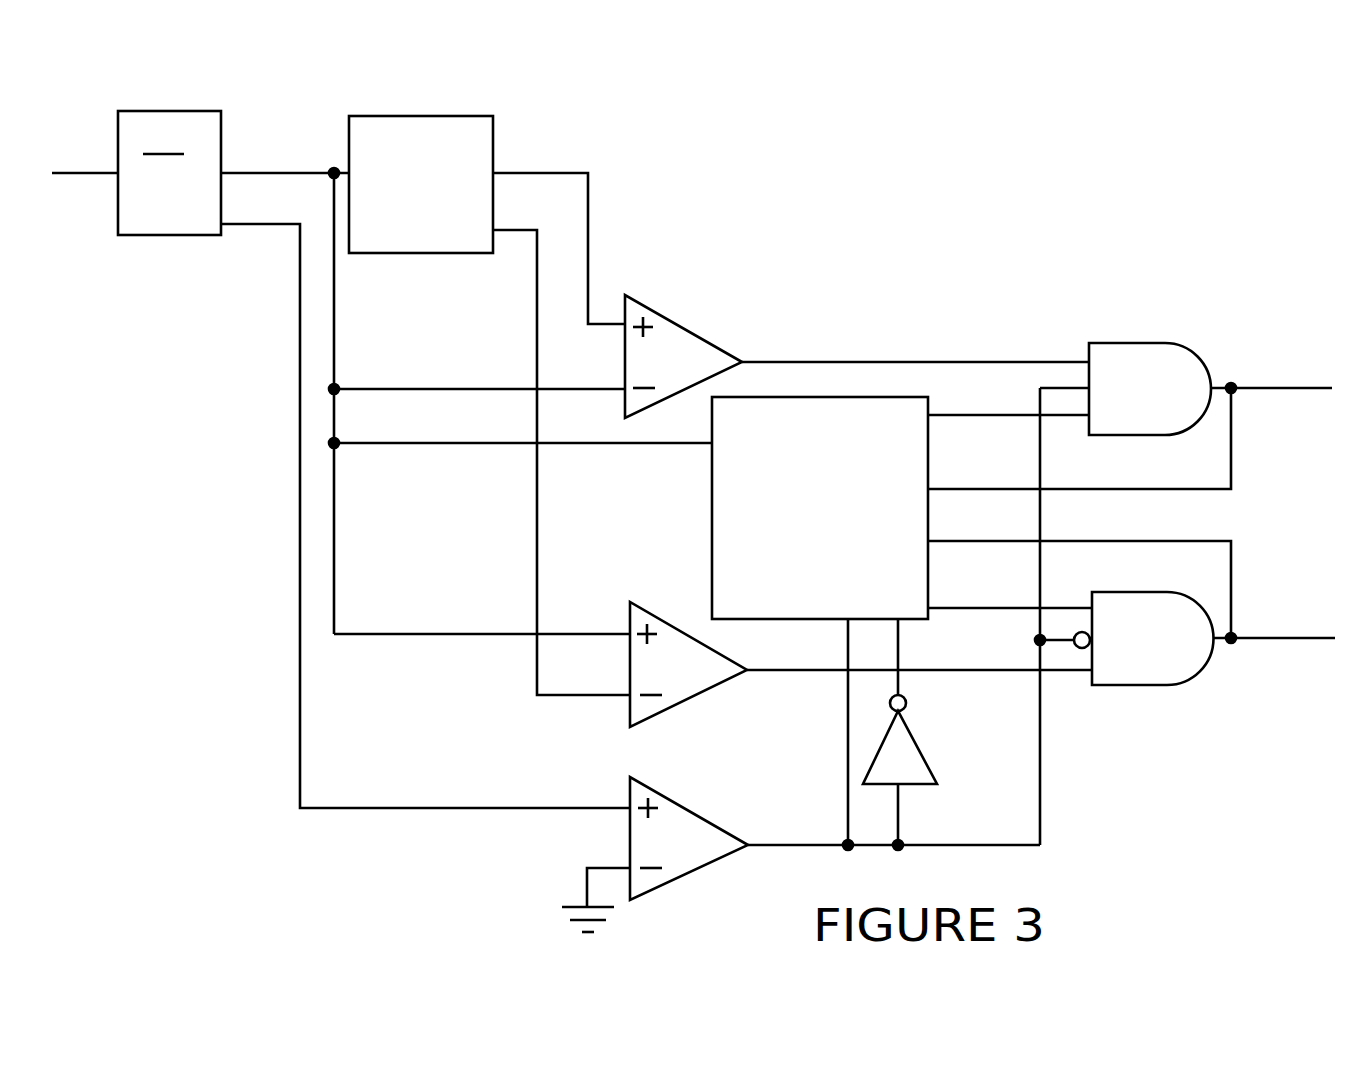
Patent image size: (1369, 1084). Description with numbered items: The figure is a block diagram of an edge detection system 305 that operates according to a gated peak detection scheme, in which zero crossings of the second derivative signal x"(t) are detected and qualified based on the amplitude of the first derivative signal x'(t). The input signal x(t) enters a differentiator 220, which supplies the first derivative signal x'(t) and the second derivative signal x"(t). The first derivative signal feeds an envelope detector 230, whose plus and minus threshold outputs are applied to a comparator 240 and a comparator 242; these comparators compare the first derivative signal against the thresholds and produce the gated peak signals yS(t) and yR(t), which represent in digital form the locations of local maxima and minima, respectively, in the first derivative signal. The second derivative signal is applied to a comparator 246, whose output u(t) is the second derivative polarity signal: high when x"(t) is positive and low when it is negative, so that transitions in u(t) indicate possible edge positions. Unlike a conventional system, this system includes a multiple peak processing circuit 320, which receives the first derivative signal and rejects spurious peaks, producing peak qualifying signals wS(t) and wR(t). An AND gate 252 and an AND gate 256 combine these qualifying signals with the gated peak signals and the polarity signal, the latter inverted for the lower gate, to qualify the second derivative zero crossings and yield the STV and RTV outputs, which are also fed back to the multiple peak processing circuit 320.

The edge detection system 305 is at (922, 180).
The differentiator 220 is at (192, 224).
The envelope detector 230 is at (444, 220).
The comparator 240 is at (700, 374).
The comparator 242 is at (705, 679).
The comparator 246 is at (710, 853).
The multiple peak processing circuit 320 is at (843, 591).
The AND gate 252 is at (1172, 404).
The AND gate 256 is at (1174, 654).